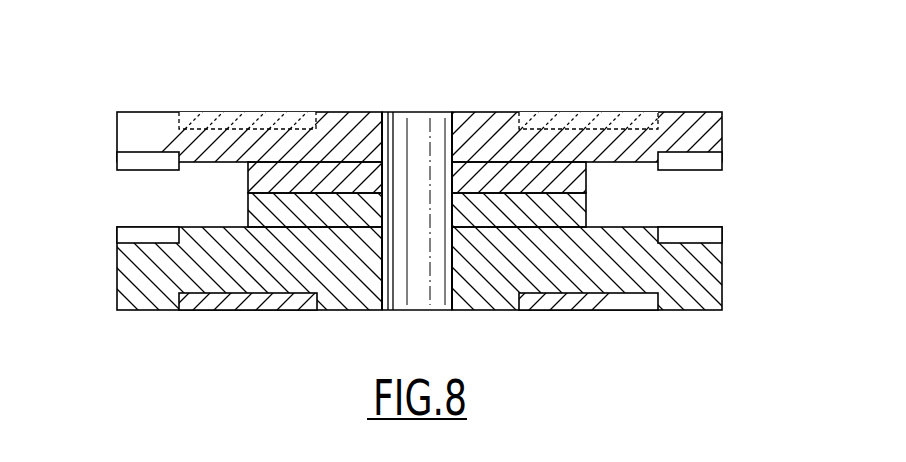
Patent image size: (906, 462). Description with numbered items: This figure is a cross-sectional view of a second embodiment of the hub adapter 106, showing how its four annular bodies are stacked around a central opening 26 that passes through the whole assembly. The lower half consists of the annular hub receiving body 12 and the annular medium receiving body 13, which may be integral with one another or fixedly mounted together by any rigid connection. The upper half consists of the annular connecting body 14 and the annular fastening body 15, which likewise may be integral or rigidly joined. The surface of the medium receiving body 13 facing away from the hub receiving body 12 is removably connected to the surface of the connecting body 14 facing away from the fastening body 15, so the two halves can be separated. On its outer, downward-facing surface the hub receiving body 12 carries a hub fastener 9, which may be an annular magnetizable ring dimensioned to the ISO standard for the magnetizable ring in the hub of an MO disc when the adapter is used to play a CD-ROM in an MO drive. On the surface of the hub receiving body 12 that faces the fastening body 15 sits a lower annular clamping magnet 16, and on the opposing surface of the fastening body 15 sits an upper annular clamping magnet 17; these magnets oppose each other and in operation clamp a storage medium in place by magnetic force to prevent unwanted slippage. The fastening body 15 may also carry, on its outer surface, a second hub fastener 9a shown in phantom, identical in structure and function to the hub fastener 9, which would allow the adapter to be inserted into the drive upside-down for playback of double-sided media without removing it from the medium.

The hub adapter 106 is at (550, 63).
The annular fastening body 15 is at (140, 112).
The second hub fastener 9a is at (283, 112).
The through hole 26 is at (427, 112).
The upper annular clamping magnet 17 is at (117, 162).
The annular connecting body 14 is at (248, 178).
The annular medium receiving body 13 is at (248, 212).
The lower annular clamping magnet 16 is at (117, 237).
The annular hub receiving body 12 is at (117, 293).
The hub fastener 9 is at (263, 311).